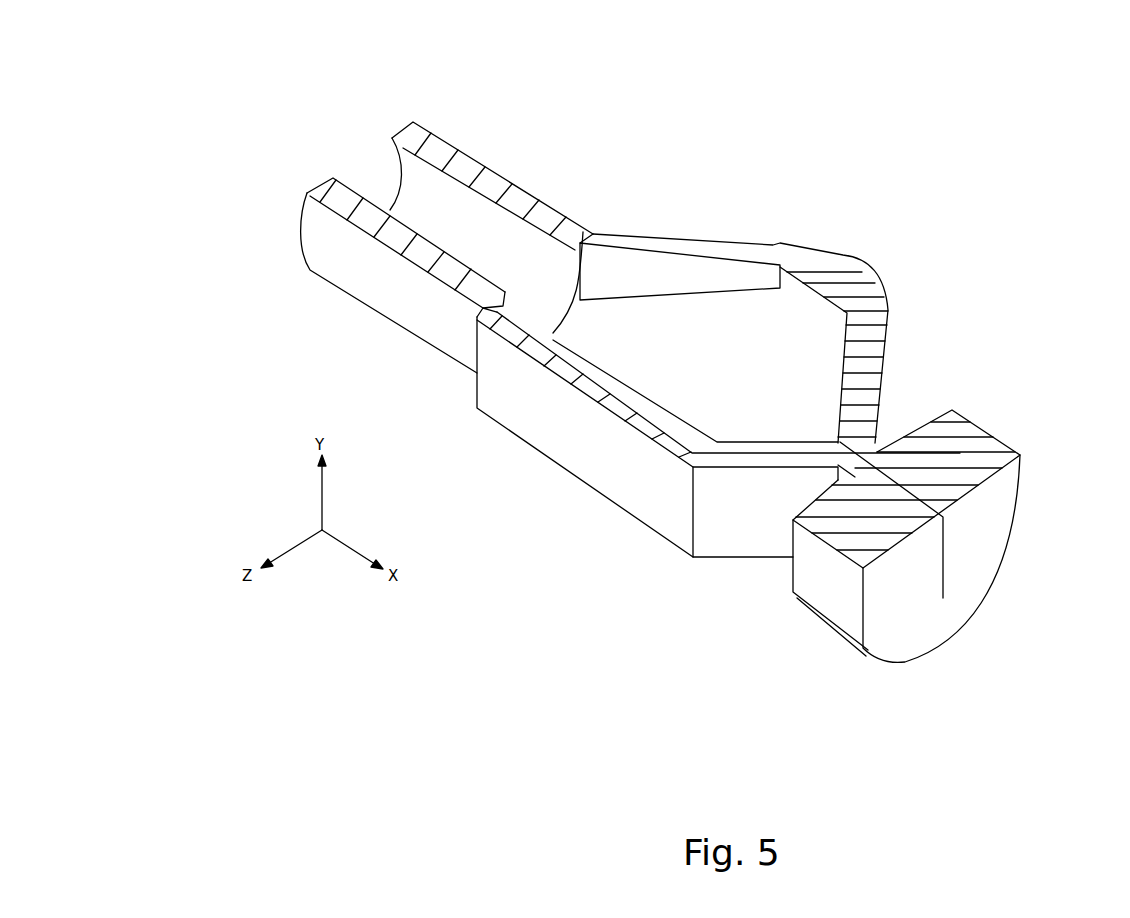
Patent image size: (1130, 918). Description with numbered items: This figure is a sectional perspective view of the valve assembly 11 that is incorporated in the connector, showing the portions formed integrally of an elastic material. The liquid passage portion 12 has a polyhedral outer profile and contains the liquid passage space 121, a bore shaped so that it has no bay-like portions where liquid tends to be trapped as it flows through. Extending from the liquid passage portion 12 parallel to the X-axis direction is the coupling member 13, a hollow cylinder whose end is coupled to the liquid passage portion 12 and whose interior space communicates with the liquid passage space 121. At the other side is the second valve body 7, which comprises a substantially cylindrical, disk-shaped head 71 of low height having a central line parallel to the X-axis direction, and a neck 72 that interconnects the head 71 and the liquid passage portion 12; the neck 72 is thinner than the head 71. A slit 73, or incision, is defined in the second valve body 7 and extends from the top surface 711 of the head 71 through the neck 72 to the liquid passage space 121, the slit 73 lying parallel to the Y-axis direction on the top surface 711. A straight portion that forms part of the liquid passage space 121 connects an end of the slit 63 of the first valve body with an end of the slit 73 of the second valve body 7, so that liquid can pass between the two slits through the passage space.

The valve assembly 11 is at (794, 152).
The liquid passage portion 12 is at (607, 455).
The coupling member 13 is at (478, 182).
The liquid passage space 121 is at (692, 333).
The slit 63 is at (803, 268).
The second valve body 7 is at (1005, 580).
The head 71 is at (960, 448).
The top surface 711 is at (993, 523).
The neck 72 is at (880, 445).
The slit 73 is at (893, 493).